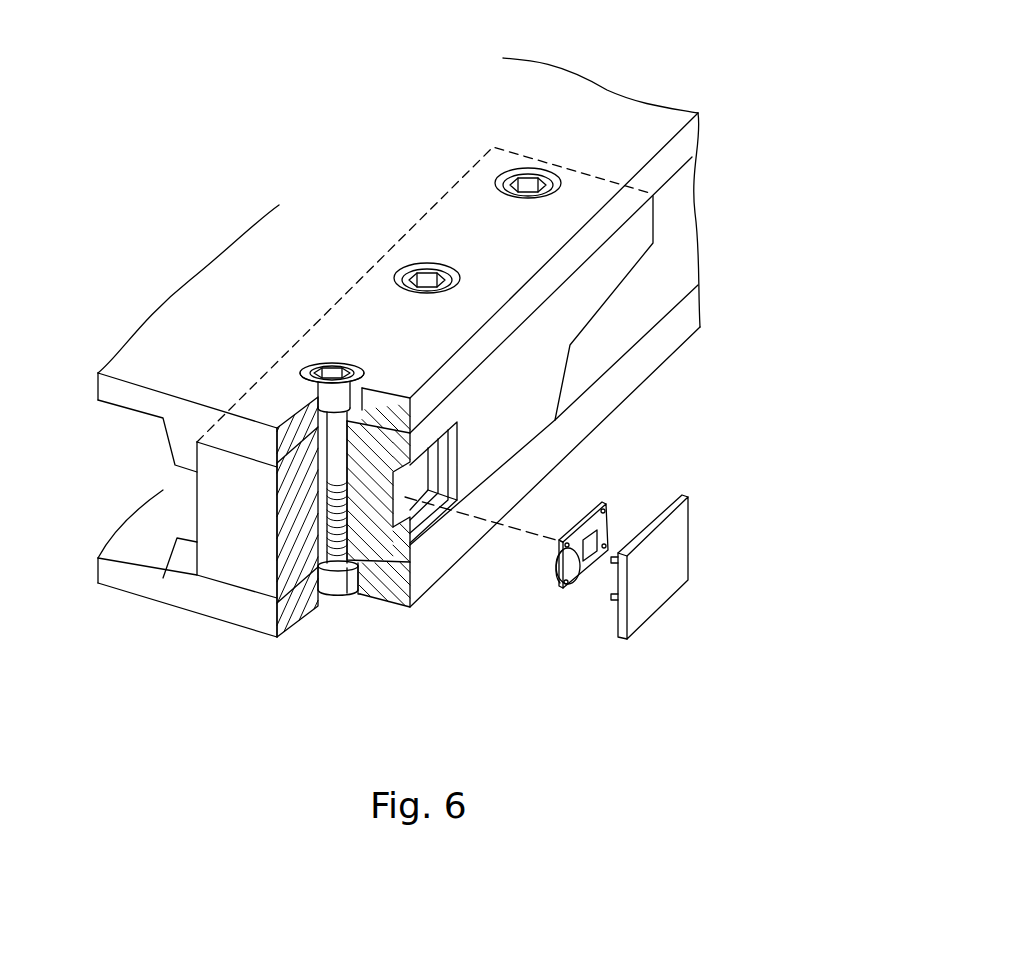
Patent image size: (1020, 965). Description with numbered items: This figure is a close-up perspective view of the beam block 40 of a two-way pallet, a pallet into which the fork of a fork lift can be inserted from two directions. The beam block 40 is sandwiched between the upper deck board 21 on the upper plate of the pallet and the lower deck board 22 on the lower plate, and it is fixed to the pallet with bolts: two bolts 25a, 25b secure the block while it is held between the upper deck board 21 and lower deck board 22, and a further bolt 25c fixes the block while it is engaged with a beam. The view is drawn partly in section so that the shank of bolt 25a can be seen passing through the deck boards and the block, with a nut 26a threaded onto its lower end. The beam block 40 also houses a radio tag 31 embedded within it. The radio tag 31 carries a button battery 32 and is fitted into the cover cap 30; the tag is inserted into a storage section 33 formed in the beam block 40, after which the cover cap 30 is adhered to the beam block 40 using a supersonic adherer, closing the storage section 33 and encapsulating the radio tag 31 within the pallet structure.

The upper deck board 21 is at (157, 352).
The lower deck board 22 is at (133, 580).
The bolt 25a is at (325, 360).
The bolt 25b is at (421, 264).
The bolt 25c is at (510, 172).
The nut 26a is at (340, 597).
The cover cap 30 is at (663, 564).
The radio tag 31 is at (588, 572).
The button battery 32 is at (562, 570).
The storage section 33 is at (405, 497).
The beam block 40 is at (627, 256).